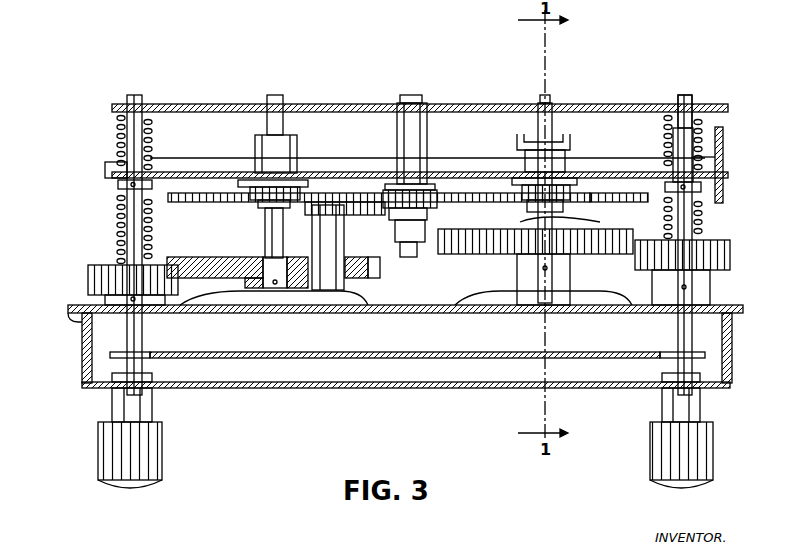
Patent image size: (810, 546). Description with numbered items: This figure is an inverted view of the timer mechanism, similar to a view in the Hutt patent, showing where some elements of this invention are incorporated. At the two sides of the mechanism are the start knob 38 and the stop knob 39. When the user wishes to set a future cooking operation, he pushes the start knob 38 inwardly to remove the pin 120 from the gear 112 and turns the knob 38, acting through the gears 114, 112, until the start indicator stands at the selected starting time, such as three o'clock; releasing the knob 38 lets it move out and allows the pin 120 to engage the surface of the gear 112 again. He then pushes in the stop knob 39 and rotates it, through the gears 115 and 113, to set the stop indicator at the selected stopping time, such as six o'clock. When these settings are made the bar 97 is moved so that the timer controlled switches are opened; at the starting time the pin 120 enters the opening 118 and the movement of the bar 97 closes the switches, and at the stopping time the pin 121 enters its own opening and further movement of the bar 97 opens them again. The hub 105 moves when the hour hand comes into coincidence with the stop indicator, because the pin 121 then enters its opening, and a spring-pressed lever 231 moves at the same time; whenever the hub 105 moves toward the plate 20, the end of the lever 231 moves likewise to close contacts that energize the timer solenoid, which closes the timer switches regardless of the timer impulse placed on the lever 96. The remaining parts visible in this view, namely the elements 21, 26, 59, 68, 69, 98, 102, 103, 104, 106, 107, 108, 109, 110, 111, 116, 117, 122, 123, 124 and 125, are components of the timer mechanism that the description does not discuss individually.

The plate 20 is at (398, 358).
The top plate 21 is at (178, 104).
The frame / housing 26 is at (312, 390).
The start knob 38 is at (148, 455).
The stop knob 39 is at (668, 455).
The nozzle 59 is at (410, 257).
The gear 68 is at (372, 192).
The housing 69 is at (405, 226).
The lever 96 is at (725, 140).
The bar 97 is at (318, 160).
The center shaft 98 is at (412, 120).
The upper spring 102 is at (118, 126).
The sleeve 103 is at (684, 105).
The bearing block 104 is at (258, 140).
The hub 105 is at (568, 160).
The flange 106 is at (250, 182).
The gear assembly 107 is at (520, 182).
The shaft 108 is at (275, 95).
The shaft 109 is at (550, 103).
The rack 110 is at (212, 202).
The rack end 111 is at (594, 193).
The gear 112 is at (218, 258).
The gear 113 is at (455, 254).
The gear 114 is at (105, 280).
The gear 115 is at (718, 252).
The lower shaft portion 116 is at (232, 358).
The bearing arc 117 is at (512, 305).
The opening 118 is at (330, 300).
The pin 120 is at (334, 202).
The pin 121 is at (580, 218).
The collar 122 is at (118, 185).
The collar 123 is at (668, 184).
The lower spring 124 is at (118, 232).
The spring 125 is at (702, 222).
The spring-pressed lever 231 is at (518, 137).